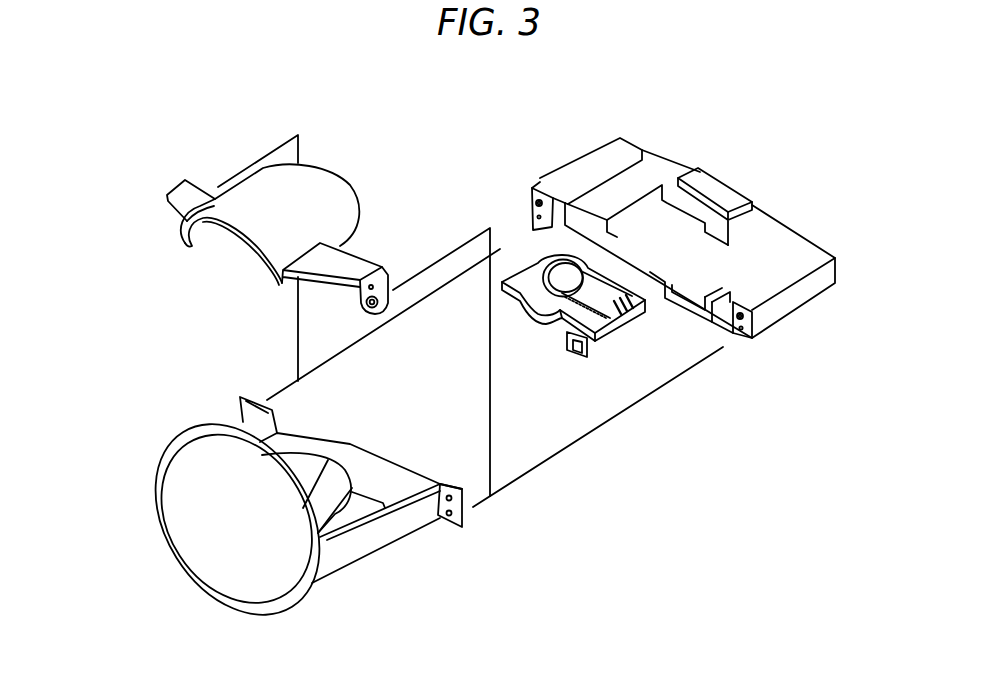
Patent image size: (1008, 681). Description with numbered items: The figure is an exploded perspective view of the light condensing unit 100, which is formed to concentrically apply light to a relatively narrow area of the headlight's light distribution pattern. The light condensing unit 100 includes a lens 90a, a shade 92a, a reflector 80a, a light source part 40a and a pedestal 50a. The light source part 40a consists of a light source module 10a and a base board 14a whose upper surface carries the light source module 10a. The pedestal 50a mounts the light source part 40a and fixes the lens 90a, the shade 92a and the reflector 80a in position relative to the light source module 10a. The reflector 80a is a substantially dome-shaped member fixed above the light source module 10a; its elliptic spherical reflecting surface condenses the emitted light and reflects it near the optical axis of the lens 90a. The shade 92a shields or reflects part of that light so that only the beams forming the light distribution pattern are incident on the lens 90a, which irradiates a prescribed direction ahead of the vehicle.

The light condensing unit 100 is at (117, 128).
The reflector 80a is at (277, 188).
The lens 90a is at (193, 467).
The shade 92a is at (300, 447).
The light source part 40a is at (570, 128).
The base board 14a is at (526, 265).
The light source module 10a is at (558, 257).
The pedestal 50a is at (783, 243).